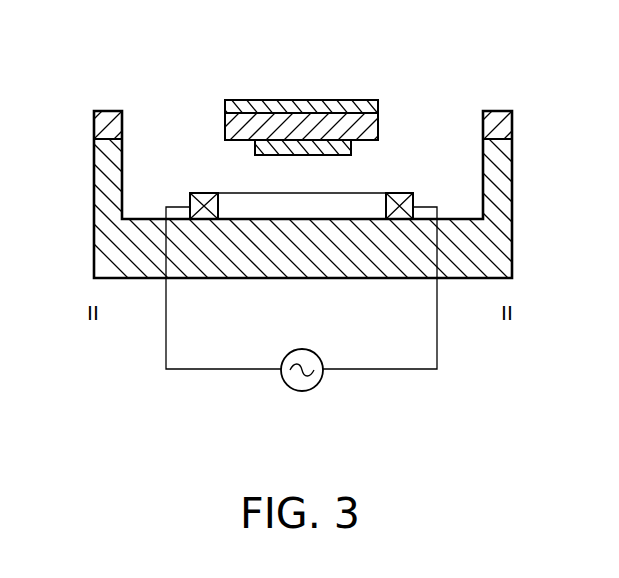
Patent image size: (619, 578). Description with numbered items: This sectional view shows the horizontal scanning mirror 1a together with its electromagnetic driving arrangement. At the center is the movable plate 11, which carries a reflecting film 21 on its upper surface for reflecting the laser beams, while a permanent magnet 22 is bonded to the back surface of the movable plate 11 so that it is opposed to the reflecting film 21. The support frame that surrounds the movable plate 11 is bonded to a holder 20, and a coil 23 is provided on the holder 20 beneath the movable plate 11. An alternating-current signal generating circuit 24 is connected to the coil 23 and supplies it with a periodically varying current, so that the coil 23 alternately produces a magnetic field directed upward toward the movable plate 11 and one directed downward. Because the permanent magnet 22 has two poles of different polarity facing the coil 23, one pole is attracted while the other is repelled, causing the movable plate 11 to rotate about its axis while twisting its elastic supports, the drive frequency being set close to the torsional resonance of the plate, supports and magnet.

The horizontal scanning mirror 1a is at (494, 73).
The movable plate 11 is at (380, 123).
The holder 20 is at (500, 252).
The reflecting film 21 is at (338, 103).
The permanent magnet 22 is at (344, 149).
The coil 23 is at (400, 221).
The alternating-current signal generating circuit 24 is at (320, 384).